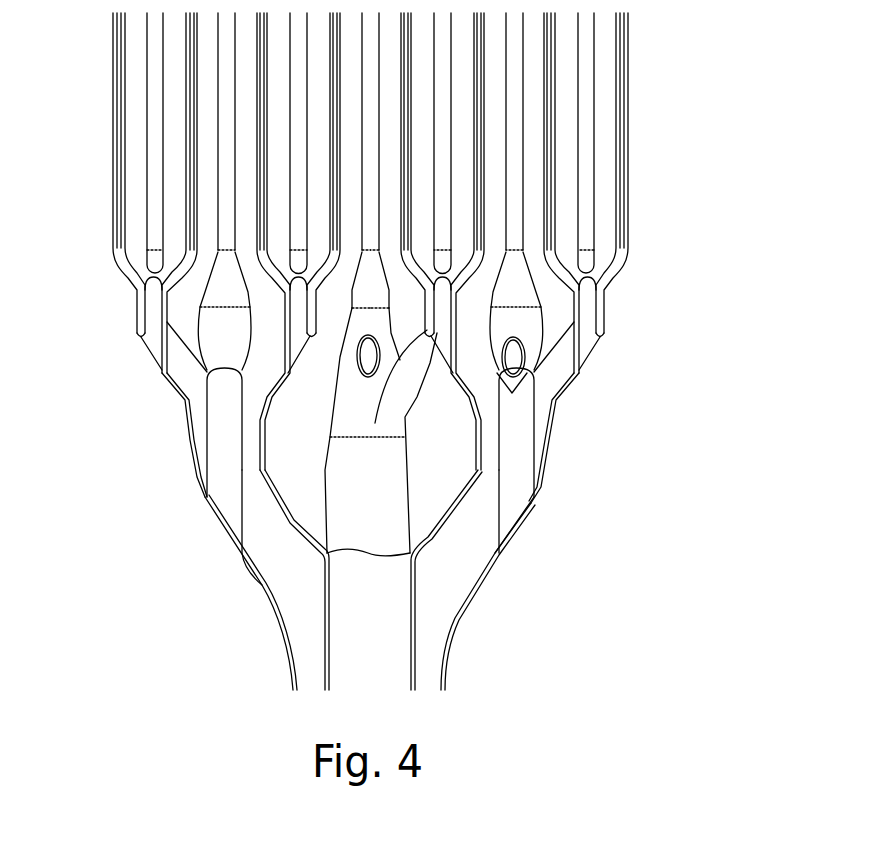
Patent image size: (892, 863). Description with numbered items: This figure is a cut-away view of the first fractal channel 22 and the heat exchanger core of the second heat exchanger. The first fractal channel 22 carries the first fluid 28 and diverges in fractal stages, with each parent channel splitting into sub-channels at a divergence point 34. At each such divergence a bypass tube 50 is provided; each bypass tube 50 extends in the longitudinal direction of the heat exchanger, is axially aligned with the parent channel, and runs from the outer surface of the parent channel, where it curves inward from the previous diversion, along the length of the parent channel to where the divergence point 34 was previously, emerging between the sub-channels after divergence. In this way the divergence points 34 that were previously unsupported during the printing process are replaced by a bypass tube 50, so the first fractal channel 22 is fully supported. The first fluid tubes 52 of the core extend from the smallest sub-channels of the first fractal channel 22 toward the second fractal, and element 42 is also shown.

The first fractal channel 22 is at (148, 437).
The first fluid 28 is at (632, 83).
The divergence point 34 is at (260, 585).
The outlet channel wall 42 is at (432, 636).
The bypass tube 50 is at (518, 447).
The first fluid tube 52 is at (623, 195).